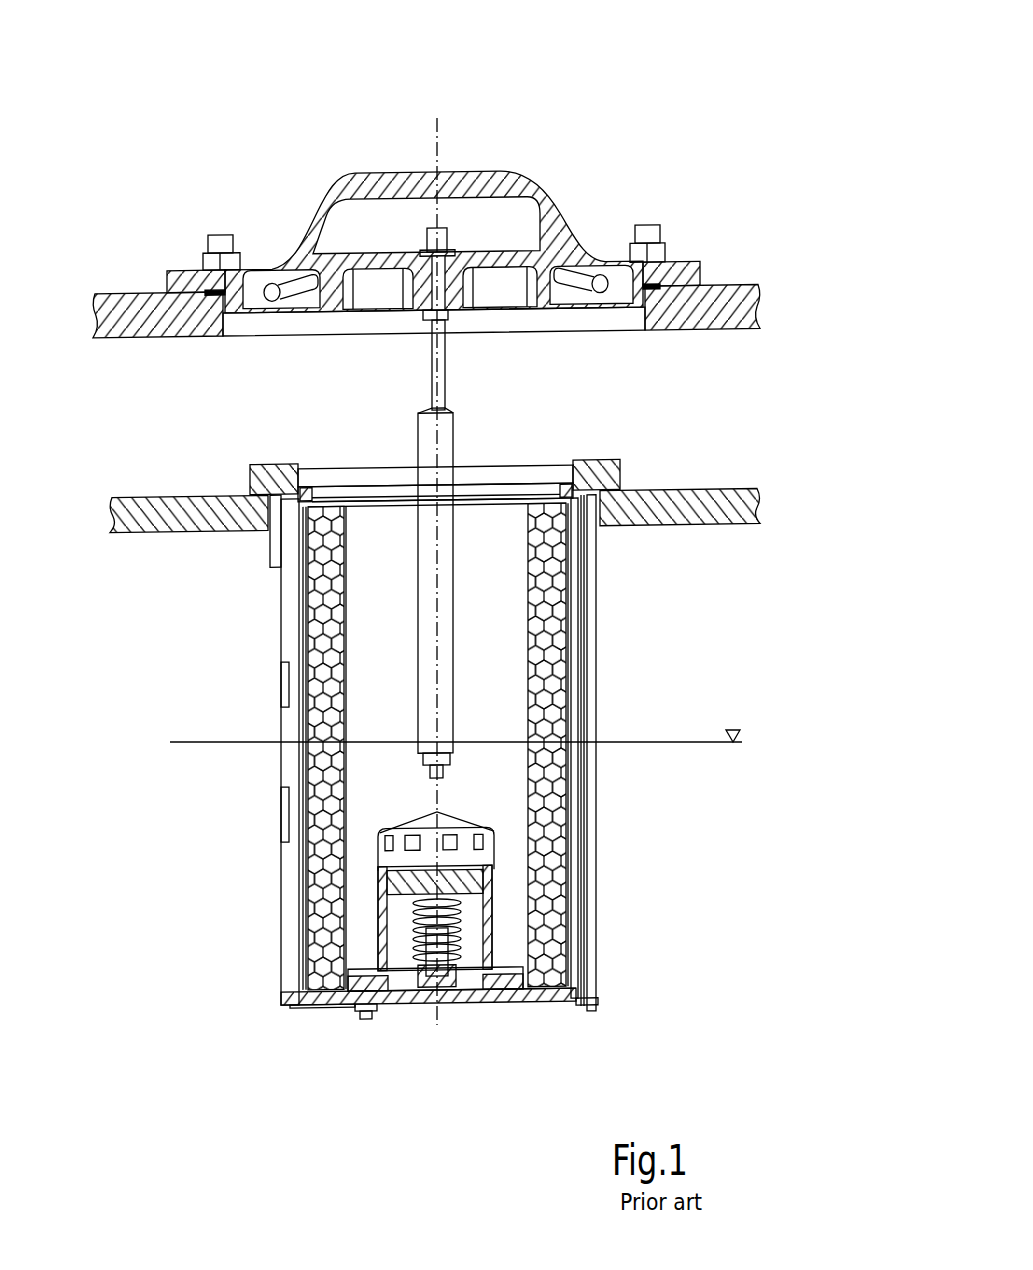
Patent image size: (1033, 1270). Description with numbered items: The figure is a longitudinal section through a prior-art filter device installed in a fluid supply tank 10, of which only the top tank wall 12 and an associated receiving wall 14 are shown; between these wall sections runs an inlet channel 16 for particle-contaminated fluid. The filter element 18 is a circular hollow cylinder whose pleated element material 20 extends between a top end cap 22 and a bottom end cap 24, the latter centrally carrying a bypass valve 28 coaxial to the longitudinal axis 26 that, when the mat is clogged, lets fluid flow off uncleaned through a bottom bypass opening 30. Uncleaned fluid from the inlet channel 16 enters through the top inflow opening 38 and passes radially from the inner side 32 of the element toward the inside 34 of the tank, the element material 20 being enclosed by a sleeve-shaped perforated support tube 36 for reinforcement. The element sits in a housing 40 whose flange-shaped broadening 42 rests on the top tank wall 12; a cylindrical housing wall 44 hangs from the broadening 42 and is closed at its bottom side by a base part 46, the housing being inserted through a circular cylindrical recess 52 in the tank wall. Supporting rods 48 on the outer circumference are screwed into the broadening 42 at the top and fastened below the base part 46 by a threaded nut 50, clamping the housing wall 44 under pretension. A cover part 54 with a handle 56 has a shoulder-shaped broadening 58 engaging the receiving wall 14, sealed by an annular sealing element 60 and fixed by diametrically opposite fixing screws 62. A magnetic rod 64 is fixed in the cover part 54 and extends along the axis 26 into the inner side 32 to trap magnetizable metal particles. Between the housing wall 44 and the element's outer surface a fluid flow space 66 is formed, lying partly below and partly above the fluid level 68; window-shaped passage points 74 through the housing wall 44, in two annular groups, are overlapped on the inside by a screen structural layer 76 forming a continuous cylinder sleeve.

The fluid supply tank 10 is at (734, 594).
The top tank wall 12 is at (695, 500).
The receiving wall 14 is at (720, 303).
The inlet channel 16 is at (291, 394).
The filter element 18 is at (545, 650).
The element material 20 is at (555, 730).
The top end cap 22 is at (338, 496).
The bottom end cap 24 is at (538, 1005).
The longitudinal axis 26 is at (437, 148).
The bypass valve 28 is at (490, 882).
The bypass opening 30 is at (415, 1005).
The inner side of the filter element 32 is at (506, 567).
The inside of the fluid supply tank 34 is at (688, 793).
The support tube 36 is at (568, 700).
The top inflow opening 38 is at (466, 498).
The housing 40 is at (605, 472).
The flange-shaped broadening 42 is at (278, 478).
The cylindrical housing wall 44 is at (283, 875).
The base part 46 is at (300, 1005).
The supporting rod 48 is at (590, 598).
The threaded nut 50 is at (597, 1003).
The recess 52 is at (275, 520).
The cover part 54 is at (553, 255).
The handle 56 is at (356, 182).
The shoulder-shaped broadening 58 is at (675, 275).
The annular sealing element 60 is at (205, 272).
The fixing screws 62 is at (222, 232).
The magnetic rod 64 is at (436, 625).
The fluid flow space 66 is at (293, 690).
The fluid level 68 is at (736, 740).
The window-shaped passage points 74 is at (590, 642).
The screen structural layer 76 is at (283, 640).